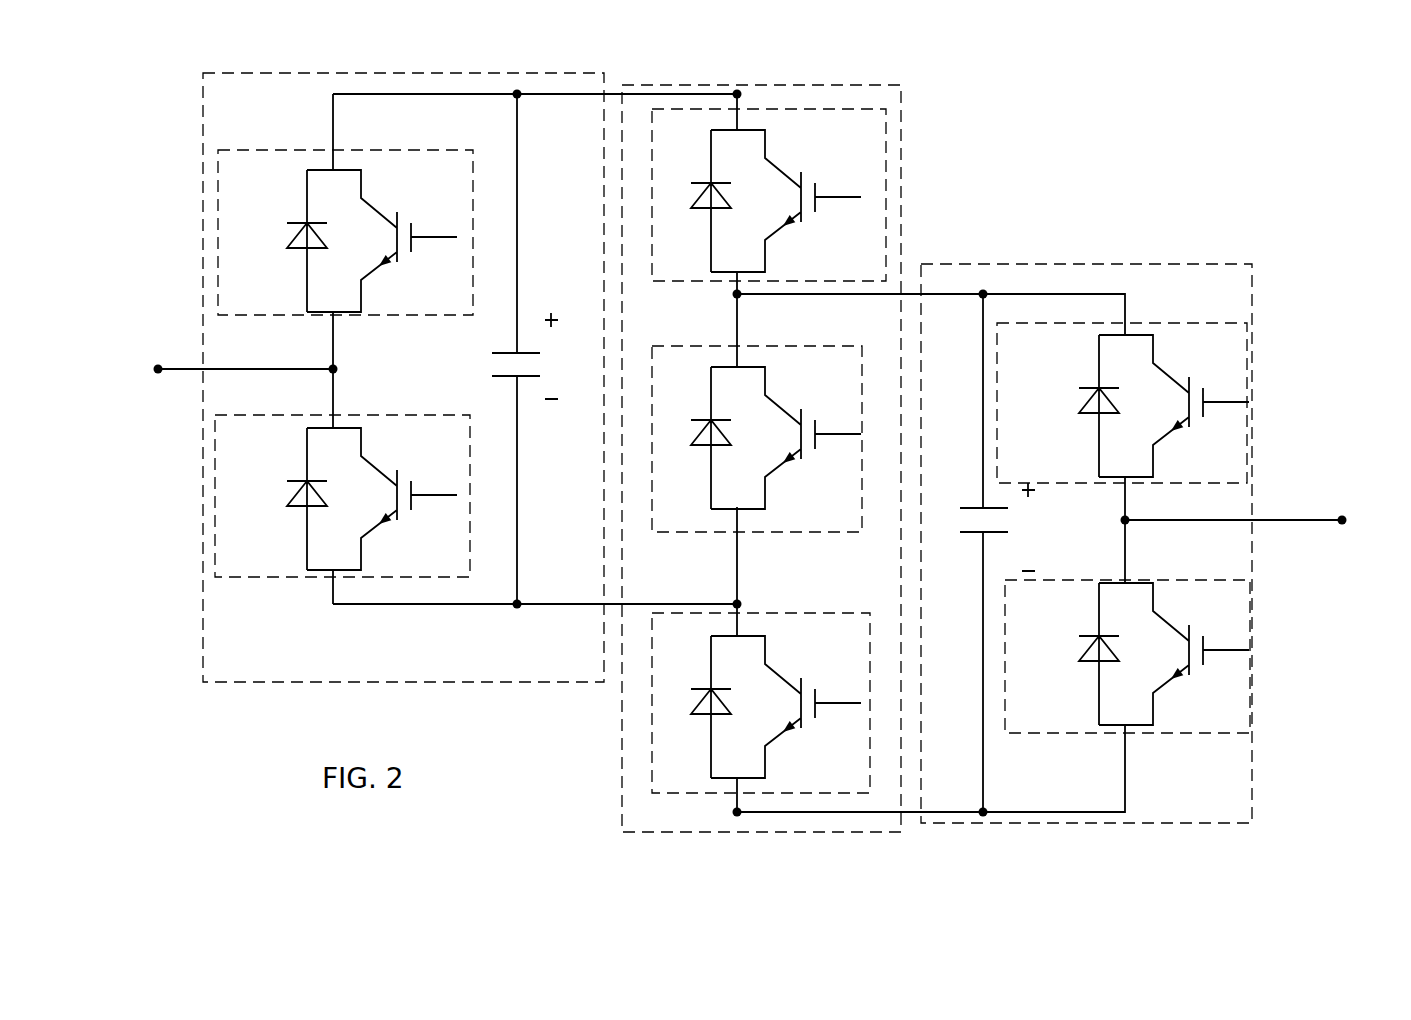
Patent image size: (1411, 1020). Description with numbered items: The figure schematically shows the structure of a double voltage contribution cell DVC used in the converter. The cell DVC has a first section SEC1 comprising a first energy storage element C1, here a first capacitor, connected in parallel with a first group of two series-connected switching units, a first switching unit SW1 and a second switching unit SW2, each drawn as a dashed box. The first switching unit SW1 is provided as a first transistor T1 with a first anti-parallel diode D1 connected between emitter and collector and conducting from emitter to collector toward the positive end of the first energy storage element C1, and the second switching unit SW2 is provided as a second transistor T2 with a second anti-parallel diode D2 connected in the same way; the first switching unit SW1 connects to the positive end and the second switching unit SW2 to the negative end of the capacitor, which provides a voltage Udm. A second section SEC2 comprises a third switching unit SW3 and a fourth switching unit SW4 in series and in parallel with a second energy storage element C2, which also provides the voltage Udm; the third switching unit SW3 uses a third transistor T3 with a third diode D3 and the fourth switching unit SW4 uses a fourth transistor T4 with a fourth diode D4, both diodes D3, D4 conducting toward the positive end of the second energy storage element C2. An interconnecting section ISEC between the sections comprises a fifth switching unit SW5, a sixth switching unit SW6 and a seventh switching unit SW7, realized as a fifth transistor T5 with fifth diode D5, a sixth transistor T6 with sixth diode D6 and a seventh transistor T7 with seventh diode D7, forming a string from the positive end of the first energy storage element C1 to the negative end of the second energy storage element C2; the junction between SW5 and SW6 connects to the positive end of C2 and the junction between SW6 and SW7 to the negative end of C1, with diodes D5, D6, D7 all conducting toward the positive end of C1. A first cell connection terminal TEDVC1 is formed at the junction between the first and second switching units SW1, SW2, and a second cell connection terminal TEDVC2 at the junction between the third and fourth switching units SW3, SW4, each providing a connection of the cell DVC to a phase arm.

The double voltage contribution cell DVC is at (173, 188).
The first section SEC1 is at (262, 683).
The second section SEC2 is at (1182, 263).
The interconnecting section ISEC is at (900, 210).
The first switching unit SW1 is at (428, 314).
The second switching unit SW2 is at (308, 579).
The third switching unit SW3 is at (1185, 305).
The fourth switching unit SW4 is at (1187, 731).
The fifth switching unit SW5 is at (718, 282).
The sixth switching unit SW6 is at (733, 533).
The seventh switching unit SW7 is at (810, 585).
The first anti-parallel diode D1 is at (286, 241).
The second anti-parallel diode D2 is at (283, 499).
The third diode D3 is at (1069, 406).
The fourth anti-parallel diode D4 is at (1073, 654).
The fifth diode D5 is at (699, 201).
The sixth diode D6 is at (699, 438).
The seventh diode D7 is at (699, 704).
The first transistor T1 is at (382, 241).
The second transistor T2 is at (382, 499).
The third transistor T3 is at (1174, 406).
The fourth transistor T4 is at (1174, 654).
The fifth transistor T5 is at (786, 198).
The sixth transistor T6 is at (786, 435).
The seventh transistor T7 is at (786, 704).
The first energy storage element C1 is at (529, 349).
The second energy storage element C2 is at (1007, 553).
The voltage Udm is at (576, 356).
The first cell connection terminal TEDVC1 is at (208, 344).
The second cell connection terminal TEDVC2 is at (1246, 501).